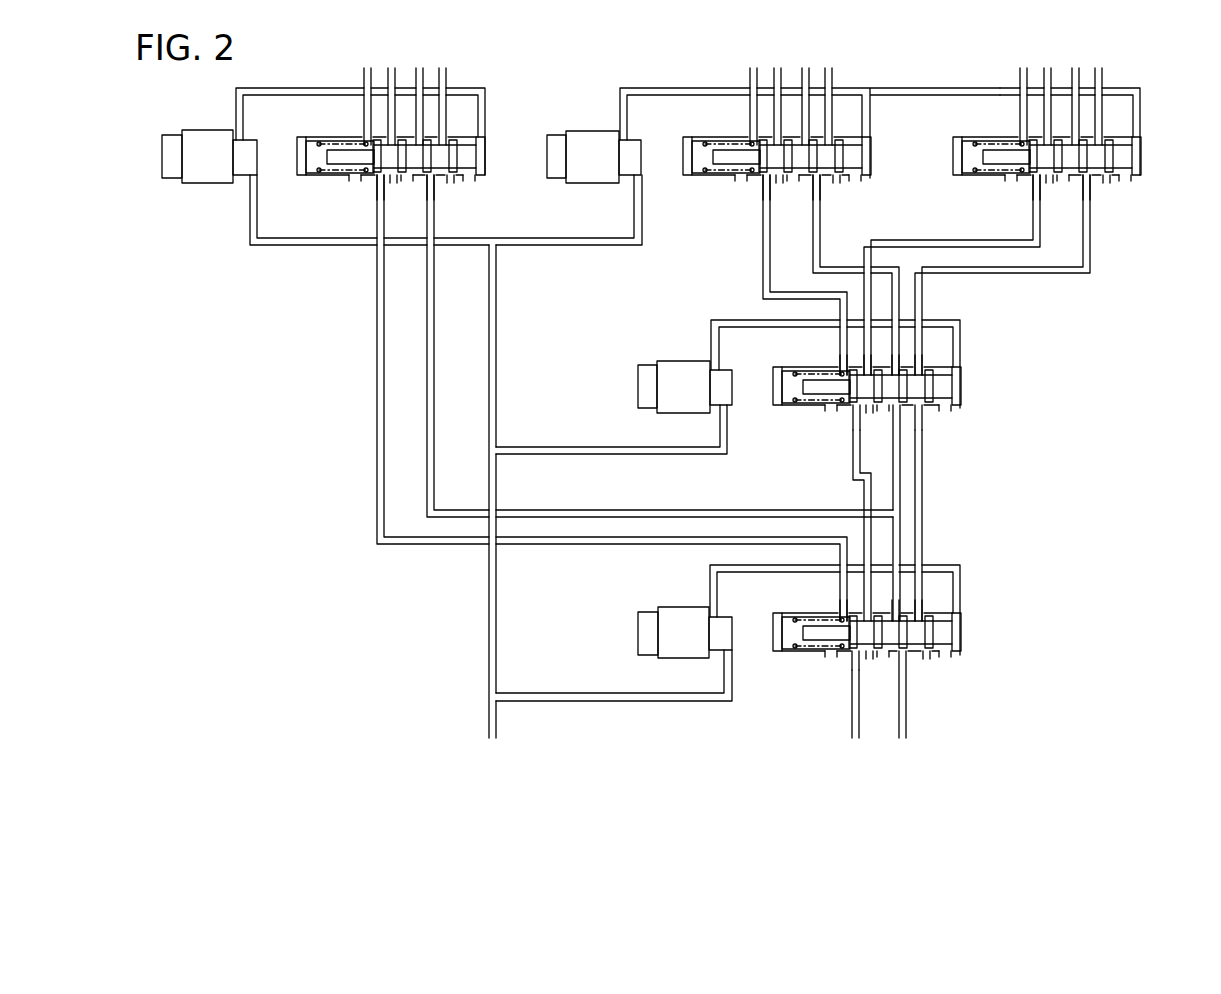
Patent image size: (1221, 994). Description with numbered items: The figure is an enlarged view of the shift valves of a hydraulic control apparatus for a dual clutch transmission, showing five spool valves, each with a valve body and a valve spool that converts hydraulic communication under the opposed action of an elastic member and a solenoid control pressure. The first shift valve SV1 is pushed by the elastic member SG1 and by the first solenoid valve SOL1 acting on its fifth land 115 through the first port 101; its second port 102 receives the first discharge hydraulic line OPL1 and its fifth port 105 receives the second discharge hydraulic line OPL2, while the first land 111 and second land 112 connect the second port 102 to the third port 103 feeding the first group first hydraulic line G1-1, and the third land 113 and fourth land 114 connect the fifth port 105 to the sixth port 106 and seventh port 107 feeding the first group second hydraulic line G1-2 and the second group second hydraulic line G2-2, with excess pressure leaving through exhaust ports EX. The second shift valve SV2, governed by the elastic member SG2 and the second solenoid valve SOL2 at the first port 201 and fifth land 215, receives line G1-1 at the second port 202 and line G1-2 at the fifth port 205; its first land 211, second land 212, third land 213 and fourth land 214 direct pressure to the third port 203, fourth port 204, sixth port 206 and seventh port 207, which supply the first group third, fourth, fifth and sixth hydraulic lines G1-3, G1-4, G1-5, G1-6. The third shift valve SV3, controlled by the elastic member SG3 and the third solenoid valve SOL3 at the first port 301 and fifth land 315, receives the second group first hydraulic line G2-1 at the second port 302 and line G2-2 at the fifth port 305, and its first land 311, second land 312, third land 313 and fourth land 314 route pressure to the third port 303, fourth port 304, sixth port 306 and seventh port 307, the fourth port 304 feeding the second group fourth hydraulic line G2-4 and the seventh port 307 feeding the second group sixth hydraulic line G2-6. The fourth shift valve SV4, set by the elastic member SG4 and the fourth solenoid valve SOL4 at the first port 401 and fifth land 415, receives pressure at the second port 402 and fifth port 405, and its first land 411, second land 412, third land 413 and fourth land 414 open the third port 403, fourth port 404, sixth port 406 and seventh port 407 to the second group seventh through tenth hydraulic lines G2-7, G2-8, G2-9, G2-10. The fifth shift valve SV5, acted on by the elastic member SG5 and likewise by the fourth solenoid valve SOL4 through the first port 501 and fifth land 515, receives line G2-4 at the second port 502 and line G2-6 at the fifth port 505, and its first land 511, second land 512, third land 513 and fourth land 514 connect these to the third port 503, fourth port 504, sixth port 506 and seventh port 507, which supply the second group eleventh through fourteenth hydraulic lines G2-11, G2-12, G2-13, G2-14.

The first port 101 is at (958, 609).
The second port 102 is at (856, 655).
The third port 103 is at (843, 613).
The fifth port 105 is at (923, 659).
The sixth port 106 is at (898, 612).
The seventh port 107 is at (921, 609).
The first land 111 is at (826, 634).
The second land 112 is at (868, 659).
The third land 113 is at (899, 718).
The fourth land 114 is at (952, 651).
The fifth land 115 is at (926, 633).
The first port 201 is at (482, 131).
The second port 202 is at (383, 178).
The third port 203 is at (367, 137).
The fourth port 204 is at (388, 125).
The fifth port 205 is at (447, 183).
The sixth port 206 is at (418, 125).
The seventh port 207 is at (445, 133).
The first land 211 is at (350, 158).
The second land 212 is at (390, 183).
The third land 213 is at (427, 240).
The fourth land 214 is at (476, 175).
The fifth land 215 is at (450, 157).
The first port 301 is at (958, 363).
The second port 302 is at (858, 408).
The third port 303 is at (843, 367).
The fourth port 304 is at (864, 367).
The fifth port 305 is at (918, 408).
The sixth port 306 is at (897, 365).
The seventh port 307 is at (921, 363).
The first land 311 is at (826, 388).
The second land 312 is at (866, 413).
The third land 313 is at (883, 513).
The fourth land 314 is at (952, 405).
The fifth land 315 is at (926, 387).
The first port 401 is at (868, 131).
The second port 402 is at (769, 178).
The third port 403 is at (753, 137).
The fourth port 404 is at (774, 125).
The fifth port 405 is at (833, 183).
The sixth port 406 is at (804, 125).
The seventh port 407 is at (831, 133).
The first land 411 is at (736, 158).
The second land 412 is at (776, 183).
The third land 413 is at (813, 240).
The fourth land 414 is at (862, 175).
The fifth land 415 is at (836, 157).
The first port 501 is at (1138, 131).
The second port 502 is at (1039, 178).
The third port 503 is at (1023, 137).
The fourth port 504 is at (1044, 125).
The fifth port 505 is at (1103, 183).
The sixth port 506 is at (1074, 125).
The seventh port 507 is at (1101, 133).
The first land 511 is at (1006, 158).
The second land 512 is at (1046, 183).
The third land 513 is at (1083, 240).
The fourth land 514 is at (1132, 175).
The fifth land 515 is at (1106, 157).
The first shift valve SV1 is at (973, 588).
The second shift valve SV2 is at (497, 112).
The third shift valve SV3 is at (973, 342).
The fourth shift valve SV4 is at (679, 188).
The fifth shift valve SV5 is at (1153, 112).
The first solenoid valve SOL1 is at (685, 632).
The second solenoid valve SOL2 is at (209, 156).
The third solenoid valve SOL3 is at (685, 387).
The fourth solenoid valve SOL4 is at (594, 157).
The elastic member SG1 is at (798, 614).
The elastic member SG2 is at (322, 138).
The elastic member SG3 is at (798, 368).
The elastic member SG4 is at (708, 138).
The elastic member SG5 is at (978, 138).
The first group first hydraulic line G1-1 is at (545, 546).
The first group second hydraulic line G1-2 is at (545, 510).
The first group third hydraulic line G1-3 is at (363, 67).
The first group fourth hydraulic line G1-4 is at (392, 68).
The first group fifth hydraulic line G1-5 is at (417, 68).
The first group sixth hydraulic line G1-6 is at (443, 67).
The second group first hydraulic line G2-1 is at (864, 495).
The second group second hydraulic line G2-2 is at (923, 500).
The second group fourth hydraulic line G2-4 is at (938, 245).
The second group sixth hydraulic line G2-6 is at (1068, 273).
The second group seventh hydraulic line G2-7 is at (749, 67).
The second group eighth hydraulic line G2-8 is at (778, 68).
The second group ninth hydraulic line G2-9 is at (803, 68).
The second group tenth hydraulic line G2-10 is at (829, 67).
The second group eleventh hydraulic line G2-11 is at (1019, 67).
The second group twelfth hydraulic line G2-12 is at (1048, 68).
The second group thirteenth hydraulic line G2-13 is at (1075, 68).
The second group fourteenth hydraulic line G2-14 is at (1099, 67).
The first discharge hydraulic line OPL1 is at (852, 727).
The second discharge hydraulic line OPL2 is at (906, 727).
The exhaust port EX is at (736, 430).